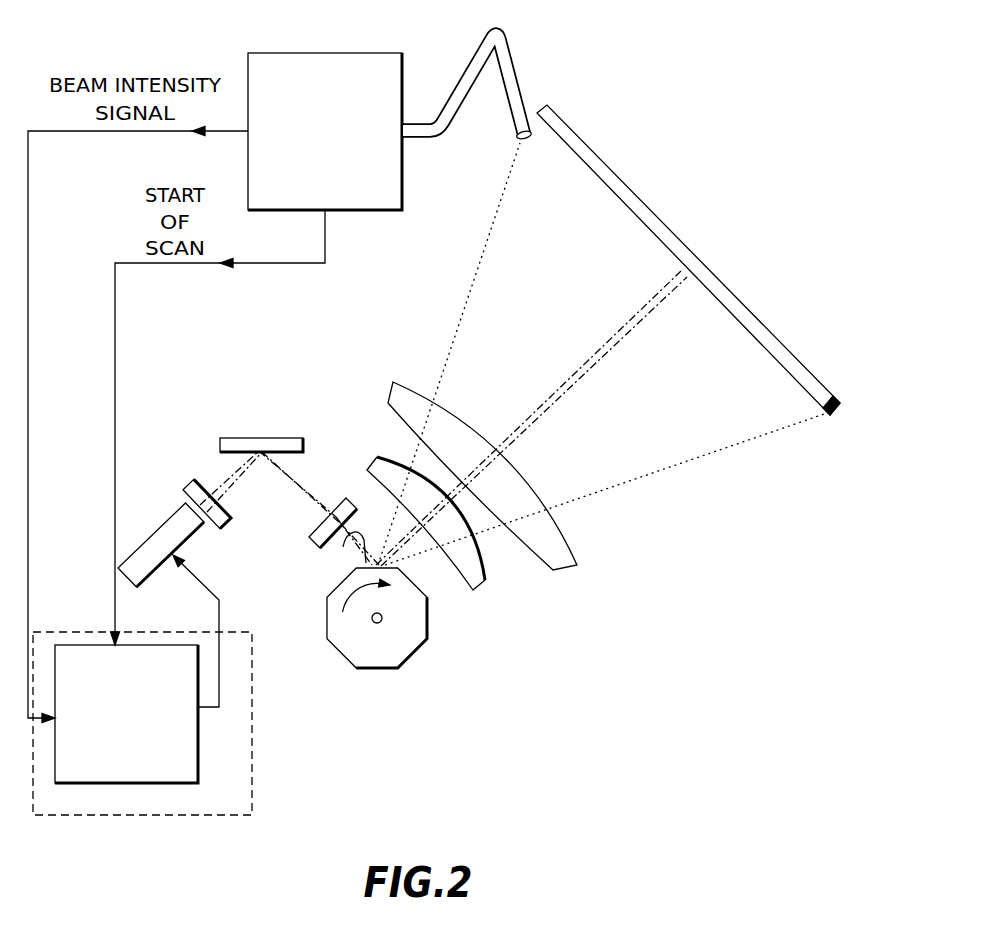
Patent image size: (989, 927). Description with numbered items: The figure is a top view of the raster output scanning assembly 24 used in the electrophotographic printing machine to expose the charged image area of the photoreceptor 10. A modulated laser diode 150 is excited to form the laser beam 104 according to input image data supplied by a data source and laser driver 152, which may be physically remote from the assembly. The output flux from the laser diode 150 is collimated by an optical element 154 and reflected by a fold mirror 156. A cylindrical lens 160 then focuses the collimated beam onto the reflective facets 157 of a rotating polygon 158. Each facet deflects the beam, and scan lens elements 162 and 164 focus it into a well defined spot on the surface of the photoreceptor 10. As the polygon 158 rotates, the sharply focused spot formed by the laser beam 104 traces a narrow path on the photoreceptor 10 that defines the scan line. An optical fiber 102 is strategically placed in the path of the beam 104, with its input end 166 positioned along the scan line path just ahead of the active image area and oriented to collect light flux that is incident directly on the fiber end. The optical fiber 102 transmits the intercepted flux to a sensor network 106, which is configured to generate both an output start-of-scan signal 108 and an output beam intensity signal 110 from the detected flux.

The photoreceptor 10 is at (658, 220).
The raster output scanning assembly 24 is at (585, 684).
The optical fiber 102 is at (458, 85).
The laser beam 104 is at (578, 373).
The sensor network 106 is at (337, 52).
The start-of-scan signal 108 is at (287, 262).
The beam intensity signal 110 is at (223, 134).
The laser diode 150 is at (150, 548).
The data source and laser driver 152 is at (178, 780).
The optical element 154 is at (195, 483).
The fold mirror 156 is at (283, 443).
The reflective facets 157 is at (343, 547).
The rotating polygon 158 is at (418, 640).
The cylindrical lens 160 is at (315, 535).
The scan lens element 162 is at (480, 580).
The scan lens element 164 is at (562, 560).
The input end 166 is at (518, 138).